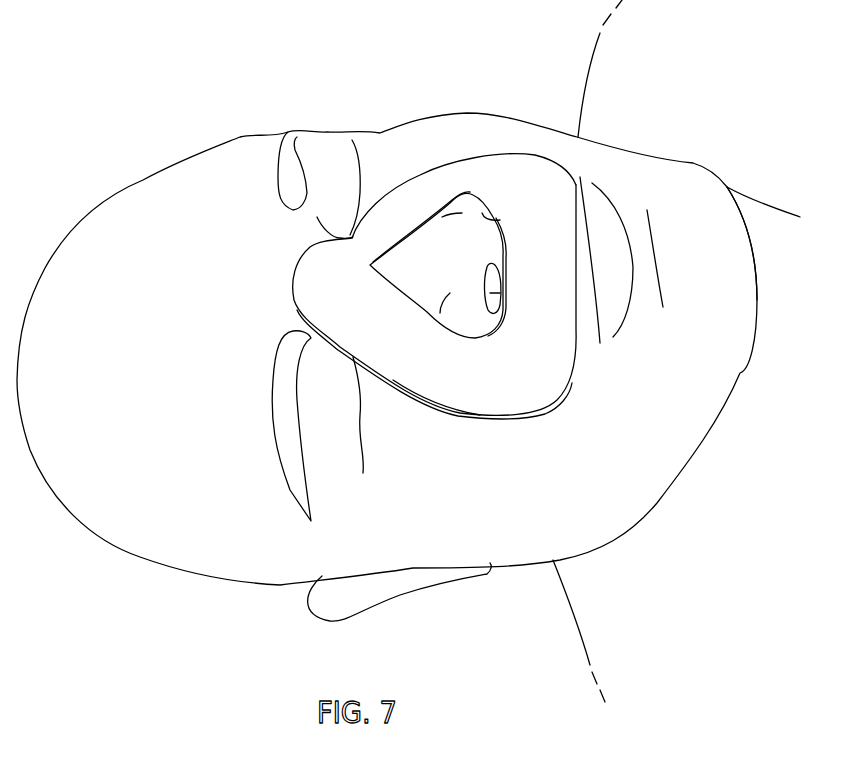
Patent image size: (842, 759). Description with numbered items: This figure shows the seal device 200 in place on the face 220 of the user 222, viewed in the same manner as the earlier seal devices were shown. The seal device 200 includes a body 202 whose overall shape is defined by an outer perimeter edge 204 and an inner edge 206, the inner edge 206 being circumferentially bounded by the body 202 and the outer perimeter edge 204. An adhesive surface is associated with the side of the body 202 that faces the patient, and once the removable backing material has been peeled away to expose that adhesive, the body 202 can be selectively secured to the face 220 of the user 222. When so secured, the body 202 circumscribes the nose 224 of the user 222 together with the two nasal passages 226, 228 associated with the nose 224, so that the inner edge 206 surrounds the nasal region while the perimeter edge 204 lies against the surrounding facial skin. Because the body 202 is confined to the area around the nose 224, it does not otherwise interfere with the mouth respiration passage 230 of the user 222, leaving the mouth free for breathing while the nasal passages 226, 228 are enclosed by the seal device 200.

The seal device 200 is at (260, 248).
The body 202 is at (503, 400).
The perimeter edge 204 is at (425, 400).
The edge 206 is at (370, 276).
The face 220 is at (470, 152).
The user 222 is at (402, 143).
The nose 224 is at (468, 267).
The nasal passage 226 is at (505, 216).
The nasal passage 228 is at (505, 298).
The mouth respiration passage 230 is at (597, 293).